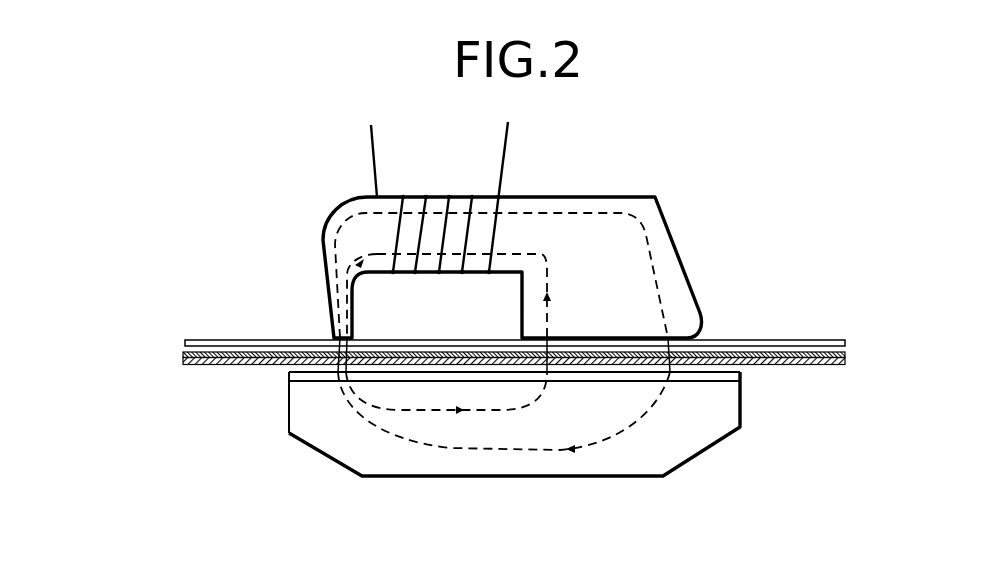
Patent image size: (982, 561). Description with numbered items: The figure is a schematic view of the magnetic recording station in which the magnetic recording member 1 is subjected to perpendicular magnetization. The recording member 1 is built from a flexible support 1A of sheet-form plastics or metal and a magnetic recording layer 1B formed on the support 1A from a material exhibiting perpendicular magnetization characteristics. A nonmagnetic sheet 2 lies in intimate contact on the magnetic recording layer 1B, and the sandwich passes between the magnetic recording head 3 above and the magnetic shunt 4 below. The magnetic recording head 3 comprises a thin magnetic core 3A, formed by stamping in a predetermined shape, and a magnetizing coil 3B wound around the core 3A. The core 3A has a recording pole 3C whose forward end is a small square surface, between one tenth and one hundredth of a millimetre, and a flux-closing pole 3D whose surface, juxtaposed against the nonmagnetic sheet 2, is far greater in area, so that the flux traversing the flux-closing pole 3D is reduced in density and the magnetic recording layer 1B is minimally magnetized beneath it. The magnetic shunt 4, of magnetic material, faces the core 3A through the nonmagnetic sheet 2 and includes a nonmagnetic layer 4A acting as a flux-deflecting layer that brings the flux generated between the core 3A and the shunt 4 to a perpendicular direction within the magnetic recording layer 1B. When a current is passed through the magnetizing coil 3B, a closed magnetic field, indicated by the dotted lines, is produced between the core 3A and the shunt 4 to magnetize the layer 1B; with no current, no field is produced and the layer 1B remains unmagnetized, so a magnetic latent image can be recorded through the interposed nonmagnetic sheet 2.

The magnetic recording member 1 is at (484, 375).
The flexible support 1A is at (183, 362).
The magnetic recording layer 1B is at (183, 354).
The nonmagnetic sheet 2 is at (232, 340).
The magnetic recording head 3 is at (516, 282).
The magnetic core 3A is at (583, 197).
The magnetizing coil 3B is at (509, 140).
The recording pole 3C is at (334, 338).
The flux-closing pole 3D is at (597, 338).
The magnetic shunt 4 is at (514, 462).
The nonmagnetic layer 4A is at (700, 382).